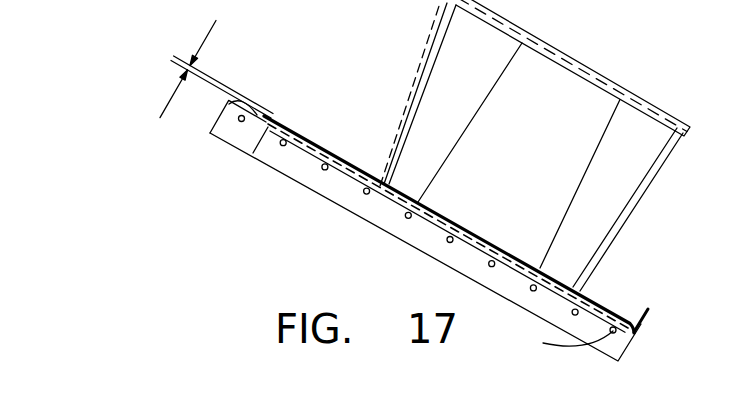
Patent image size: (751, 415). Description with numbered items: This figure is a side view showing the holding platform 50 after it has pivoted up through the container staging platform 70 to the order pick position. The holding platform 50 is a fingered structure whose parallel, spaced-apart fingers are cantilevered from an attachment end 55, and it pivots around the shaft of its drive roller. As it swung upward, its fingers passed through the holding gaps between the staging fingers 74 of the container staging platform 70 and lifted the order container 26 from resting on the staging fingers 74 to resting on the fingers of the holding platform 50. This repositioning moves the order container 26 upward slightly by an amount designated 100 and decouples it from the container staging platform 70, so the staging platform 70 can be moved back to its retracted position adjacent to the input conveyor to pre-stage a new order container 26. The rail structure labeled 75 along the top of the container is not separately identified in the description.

The order container 26 is at (538, 162).
The holding platform 50 is at (605, 300).
The attachment end 55 is at (647, 320).
The container staging platform 70 is at (452, 258).
The staging fingers 74 is at (427, 60).
The top rail 75 is at (560, 49).
The upward movement amount 100 is at (157, 112).